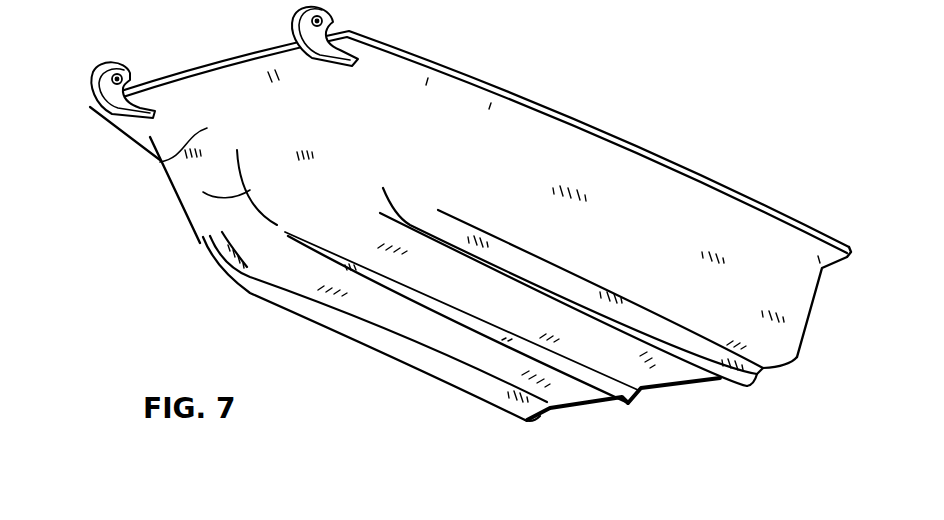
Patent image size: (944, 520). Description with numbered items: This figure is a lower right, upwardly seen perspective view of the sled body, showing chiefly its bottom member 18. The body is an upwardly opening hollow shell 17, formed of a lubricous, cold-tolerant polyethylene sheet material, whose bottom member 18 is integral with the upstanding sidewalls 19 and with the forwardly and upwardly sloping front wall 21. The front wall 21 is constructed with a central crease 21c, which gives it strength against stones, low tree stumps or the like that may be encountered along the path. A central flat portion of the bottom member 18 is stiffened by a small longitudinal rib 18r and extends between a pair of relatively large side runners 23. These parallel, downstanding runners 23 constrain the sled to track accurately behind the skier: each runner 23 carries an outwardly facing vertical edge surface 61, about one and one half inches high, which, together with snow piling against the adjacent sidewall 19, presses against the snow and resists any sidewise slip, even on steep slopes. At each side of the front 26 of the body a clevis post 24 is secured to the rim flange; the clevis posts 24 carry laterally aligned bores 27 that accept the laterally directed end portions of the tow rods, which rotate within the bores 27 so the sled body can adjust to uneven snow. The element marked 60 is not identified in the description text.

The upwardly opening hollow shell 17 is at (777, 338).
The bottom member 18 is at (640, 380).
The longitudinal rib 18r is at (583, 378).
The upstanding sidewall 19 is at (777, 283).
The front wall 21 is at (207, 186).
The central crease 21c is at (203, 245).
The side runner 23 is at (440, 377).
The clevis post 24 is at (92, 96).
The front 26 is at (160, 162).
The bore 27 is at (124, 83).
The rear rib 60 is at (698, 350).
The vertical edge surface 61 is at (757, 373).